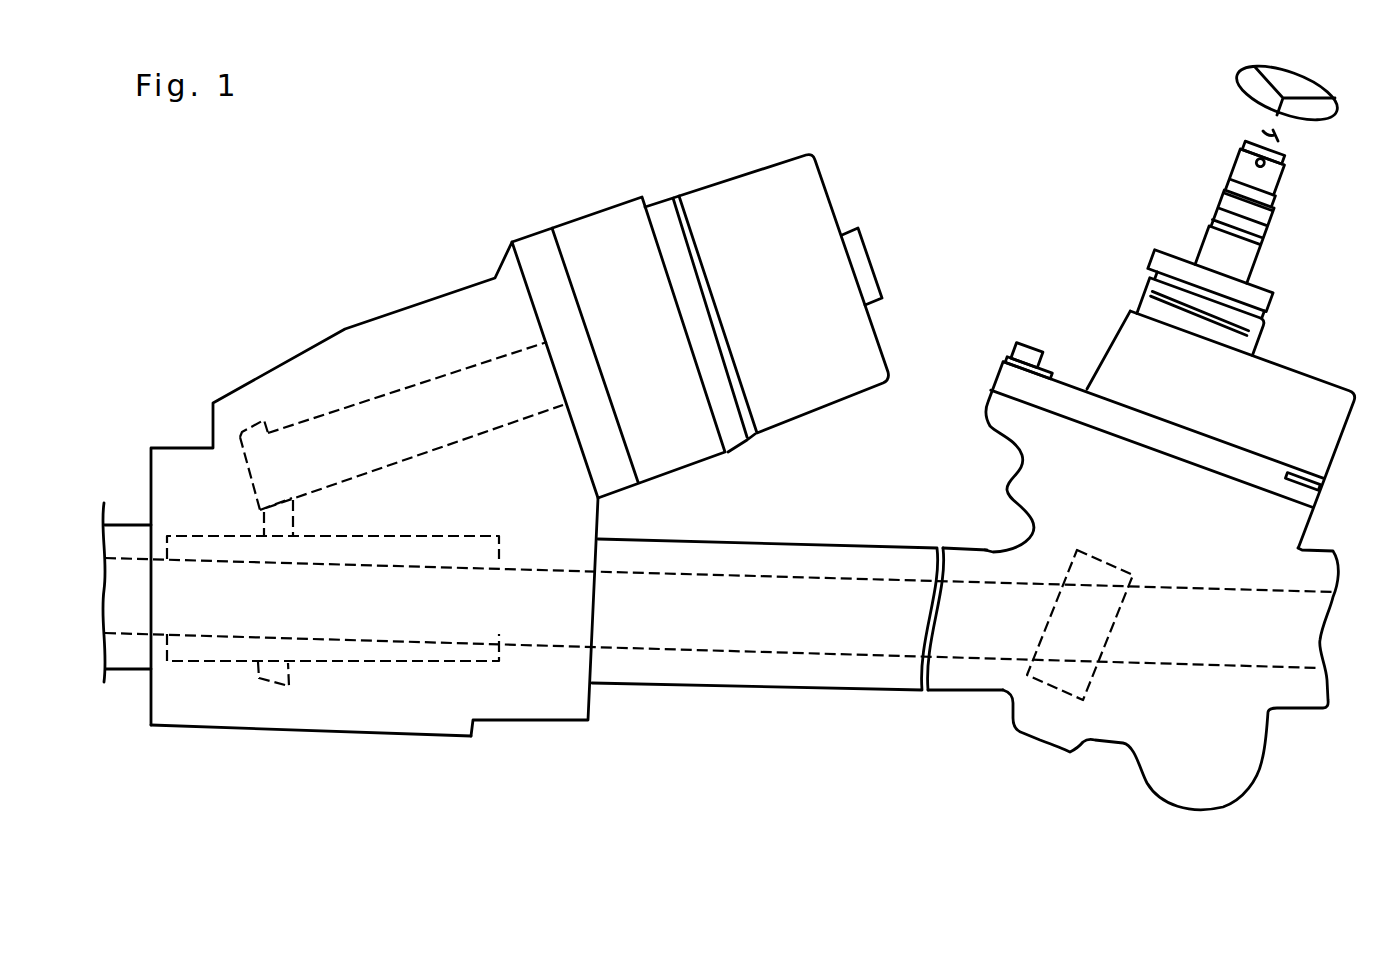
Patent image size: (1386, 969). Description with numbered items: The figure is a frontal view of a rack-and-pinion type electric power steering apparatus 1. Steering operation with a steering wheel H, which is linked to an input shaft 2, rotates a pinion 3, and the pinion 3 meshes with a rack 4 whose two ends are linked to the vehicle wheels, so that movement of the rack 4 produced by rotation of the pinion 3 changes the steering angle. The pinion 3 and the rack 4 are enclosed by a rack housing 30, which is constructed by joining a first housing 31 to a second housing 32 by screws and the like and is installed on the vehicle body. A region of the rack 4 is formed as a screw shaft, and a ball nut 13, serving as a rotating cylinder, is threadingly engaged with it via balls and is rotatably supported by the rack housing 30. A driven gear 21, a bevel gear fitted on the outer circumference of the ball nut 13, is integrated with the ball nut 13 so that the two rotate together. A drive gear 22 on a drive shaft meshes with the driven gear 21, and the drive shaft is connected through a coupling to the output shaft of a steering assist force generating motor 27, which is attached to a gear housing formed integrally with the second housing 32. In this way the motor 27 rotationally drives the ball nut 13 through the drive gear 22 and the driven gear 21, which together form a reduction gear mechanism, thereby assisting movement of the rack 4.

The electric power steering apparatus 1 is at (1310, 371).
The input shaft 2 is at (1242, 161).
The pinion 3 is at (1057, 690).
The rack 4 is at (965, 660).
The ball nut 13 is at (448, 667).
The driven gear 21 is at (268, 680).
The drive gear 22 is at (248, 425).
The steering assist force generating motor 27 is at (802, 197).
The rack housing 30 is at (823, 673).
The first housing 31 is at (124, 653).
The second housing 32 is at (183, 699).
The steering wheel H is at (1315, 123).